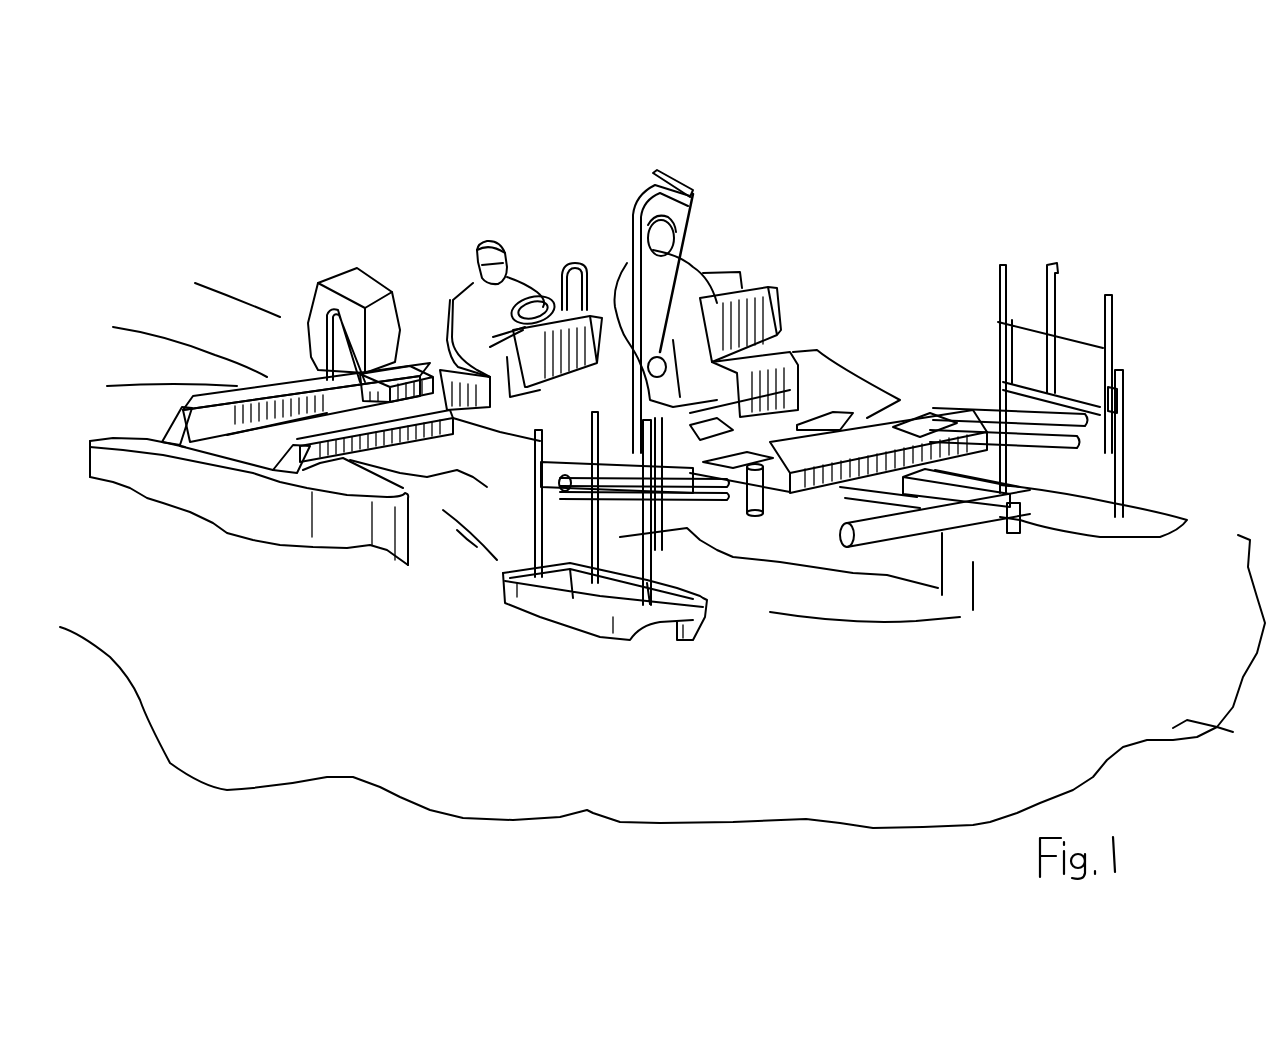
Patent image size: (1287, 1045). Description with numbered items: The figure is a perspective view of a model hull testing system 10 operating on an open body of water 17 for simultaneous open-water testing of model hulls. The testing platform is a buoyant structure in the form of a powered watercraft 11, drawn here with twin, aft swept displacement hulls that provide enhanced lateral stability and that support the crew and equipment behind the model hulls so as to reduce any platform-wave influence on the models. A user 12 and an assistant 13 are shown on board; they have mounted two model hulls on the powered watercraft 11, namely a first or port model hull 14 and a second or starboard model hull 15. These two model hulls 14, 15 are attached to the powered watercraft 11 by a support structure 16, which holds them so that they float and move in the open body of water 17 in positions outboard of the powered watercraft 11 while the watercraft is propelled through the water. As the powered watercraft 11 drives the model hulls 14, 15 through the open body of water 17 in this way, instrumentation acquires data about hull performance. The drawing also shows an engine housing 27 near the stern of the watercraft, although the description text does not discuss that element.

The model hull testing system 10 is at (372, 130).
The powered watercraft 11 is at (763, 275).
The user 12 is at (487, 245).
The assistant 13 is at (647, 207).
The first or port model hull 14 is at (1160, 503).
The second or starboard model hull 15 is at (577, 620).
The support structure 16 is at (885, 430).
The open body of water 17 is at (1233, 732).
The engine housing 27 is at (342, 283).